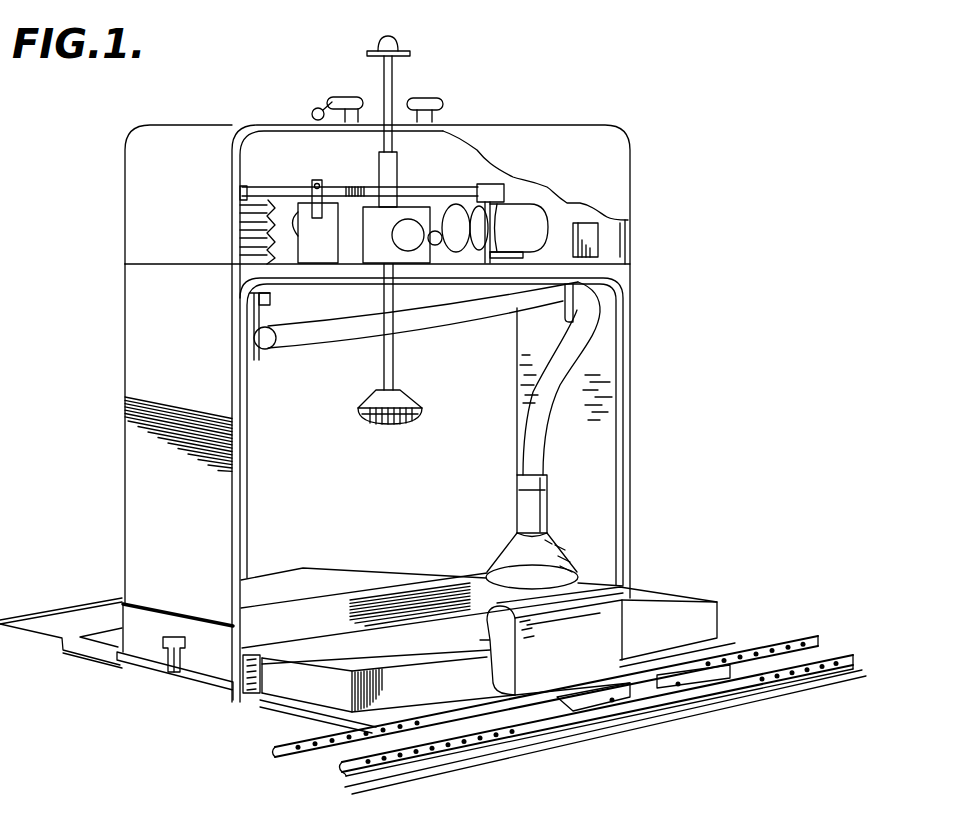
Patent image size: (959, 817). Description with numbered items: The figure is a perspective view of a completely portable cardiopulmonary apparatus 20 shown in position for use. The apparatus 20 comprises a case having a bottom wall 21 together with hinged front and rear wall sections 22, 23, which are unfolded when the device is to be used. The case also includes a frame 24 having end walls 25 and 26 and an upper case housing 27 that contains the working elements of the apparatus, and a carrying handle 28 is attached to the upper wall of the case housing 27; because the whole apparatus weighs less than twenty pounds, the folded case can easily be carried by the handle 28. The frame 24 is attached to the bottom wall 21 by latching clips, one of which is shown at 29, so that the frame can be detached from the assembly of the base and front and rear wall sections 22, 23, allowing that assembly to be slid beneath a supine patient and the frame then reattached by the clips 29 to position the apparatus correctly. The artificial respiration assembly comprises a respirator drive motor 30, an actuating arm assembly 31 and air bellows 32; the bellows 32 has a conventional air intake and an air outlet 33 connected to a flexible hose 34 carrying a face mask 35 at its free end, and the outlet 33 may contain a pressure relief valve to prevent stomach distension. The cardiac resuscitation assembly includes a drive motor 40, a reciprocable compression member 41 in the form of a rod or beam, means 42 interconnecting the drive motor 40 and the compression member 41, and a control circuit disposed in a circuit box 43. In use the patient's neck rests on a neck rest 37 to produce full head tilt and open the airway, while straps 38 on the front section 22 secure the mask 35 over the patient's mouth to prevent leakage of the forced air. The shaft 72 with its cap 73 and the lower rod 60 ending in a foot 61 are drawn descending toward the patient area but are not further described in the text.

The apparatus 20 is at (724, 328).
The bottom wall 21 is at (435, 642).
The front wall section 22 is at (545, 745).
The rear wall section 23 is at (318, 584).
The frame 24 is at (152, 345).
The end wall 25 is at (138, 492).
The end wall 26 is at (600, 465).
The upper case housing 27 is at (158, 179).
The carrying handle 28 is at (316, 108).
The latching clip 29 is at (167, 663).
The respirator drive motor 30 is at (298, 215).
The actuating arm assembly 31 is at (464, 166).
The air bellows 32 is at (262, 205).
The air outlet 33 is at (262, 313).
The flexible hose 34 is at (325, 347).
The face mask 35 is at (545, 566).
The neck rest 37 is at (607, 641).
The straps 38 is at (332, 752).
The drive motor 40 is at (495, 232).
The compression member 41 is at (397, 173).
The interconnecting means 42 is at (369, 236).
The circuit box 43 is at (553, 232).
The rod 60 is at (395, 352).
The foot 61 is at (412, 400).
The shaft 72 is at (404, 57).
The cap 73 is at (396, 40).